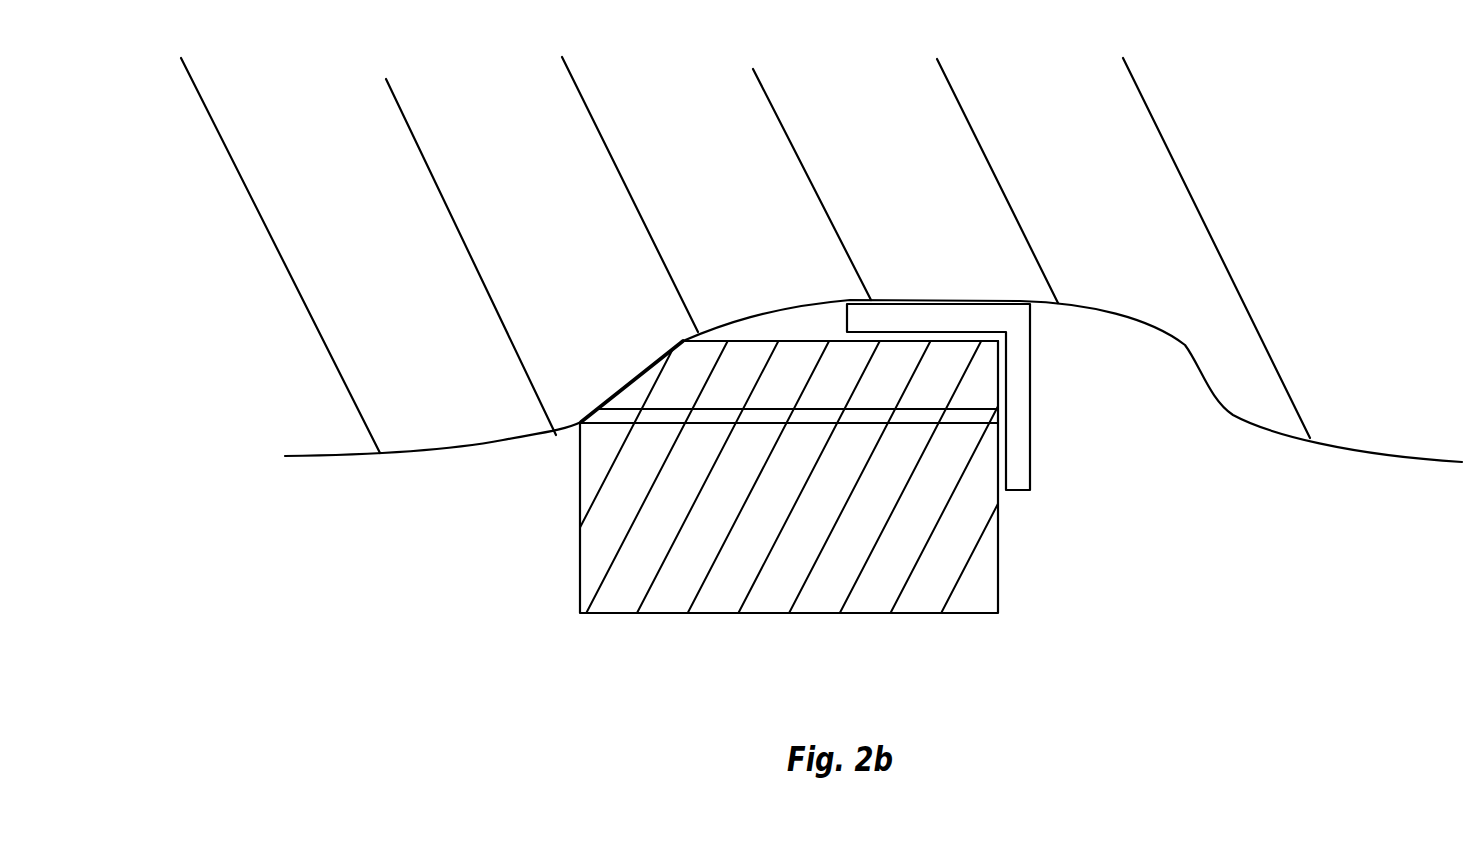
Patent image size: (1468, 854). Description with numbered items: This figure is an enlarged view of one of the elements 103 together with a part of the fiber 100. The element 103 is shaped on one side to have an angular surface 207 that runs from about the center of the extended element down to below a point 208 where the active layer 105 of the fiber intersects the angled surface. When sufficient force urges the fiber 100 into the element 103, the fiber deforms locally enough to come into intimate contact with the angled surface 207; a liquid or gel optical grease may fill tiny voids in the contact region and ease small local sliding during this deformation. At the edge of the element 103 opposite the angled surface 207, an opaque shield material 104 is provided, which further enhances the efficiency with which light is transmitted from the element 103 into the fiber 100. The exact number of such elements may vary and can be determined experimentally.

The fiber 100 is at (1233, 417).
The element 103 is at (578, 563).
The opaque shield material 104 is at (1032, 450).
The active layer 105 is at (595, 412).
The angular surface 207 is at (674, 333).
The point 208 is at (606, 397).